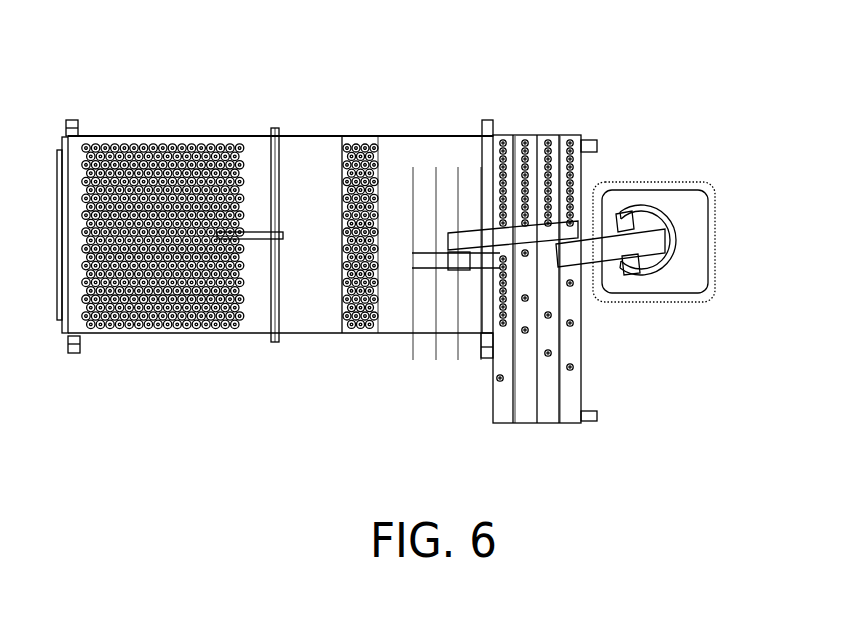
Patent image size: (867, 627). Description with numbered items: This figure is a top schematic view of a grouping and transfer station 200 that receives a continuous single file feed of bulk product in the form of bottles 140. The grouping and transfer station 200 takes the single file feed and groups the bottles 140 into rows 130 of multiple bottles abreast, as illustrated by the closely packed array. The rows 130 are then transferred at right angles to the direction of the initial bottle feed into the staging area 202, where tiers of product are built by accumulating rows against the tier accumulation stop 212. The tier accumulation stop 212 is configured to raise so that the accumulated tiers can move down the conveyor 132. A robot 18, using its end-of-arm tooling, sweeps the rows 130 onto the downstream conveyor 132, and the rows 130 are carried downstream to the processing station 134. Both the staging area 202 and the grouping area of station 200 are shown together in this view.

The robot 18 is at (720, 235).
The rows 130 is at (516, 418).
The conveyor 132 is at (307, 333).
The processing station 134 is at (183, 330).
The bottles 140 is at (498, 380).
The grouping and transfer station 200 is at (537, 137).
The staging area 202 is at (360, 150).
The tier accumulation stop 212 is at (263, 232).